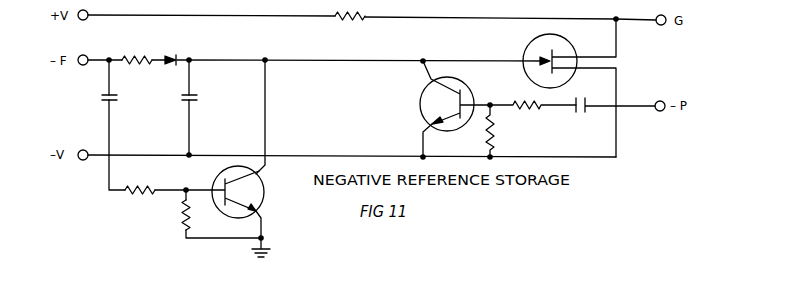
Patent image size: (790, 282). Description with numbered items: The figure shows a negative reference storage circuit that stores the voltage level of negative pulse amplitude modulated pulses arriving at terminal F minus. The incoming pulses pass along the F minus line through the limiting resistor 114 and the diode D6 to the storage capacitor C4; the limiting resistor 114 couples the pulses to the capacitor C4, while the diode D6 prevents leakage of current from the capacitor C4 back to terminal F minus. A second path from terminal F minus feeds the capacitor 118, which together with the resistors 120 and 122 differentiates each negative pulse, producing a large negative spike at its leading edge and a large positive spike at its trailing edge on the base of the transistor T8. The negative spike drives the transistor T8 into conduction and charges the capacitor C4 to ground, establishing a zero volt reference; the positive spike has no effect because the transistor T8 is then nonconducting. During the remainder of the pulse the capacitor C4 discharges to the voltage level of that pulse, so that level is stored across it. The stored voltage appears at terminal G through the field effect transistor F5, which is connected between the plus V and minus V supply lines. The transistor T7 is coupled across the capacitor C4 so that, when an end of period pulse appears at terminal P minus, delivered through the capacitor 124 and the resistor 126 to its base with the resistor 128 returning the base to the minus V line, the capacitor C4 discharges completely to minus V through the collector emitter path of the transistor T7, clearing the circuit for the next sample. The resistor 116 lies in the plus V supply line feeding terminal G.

The limiting resistor 114 is at (140, 50).
The resistor 116 is at (351, 26).
The capacitor 118 is at (114, 97).
The resistor 120 is at (136, 184).
The resistor 122 is at (170, 215).
The capacitor 124 is at (592, 109).
The resistor 126 is at (520, 109).
The resistor 128 is at (498, 133).
The diode D6 is at (177, 51).
The capacitor C4 is at (193, 98).
The transistor T7 is at (415, 94).
The transistor T8 is at (267, 196).
The field effect transistor F5 is at (567, 41).